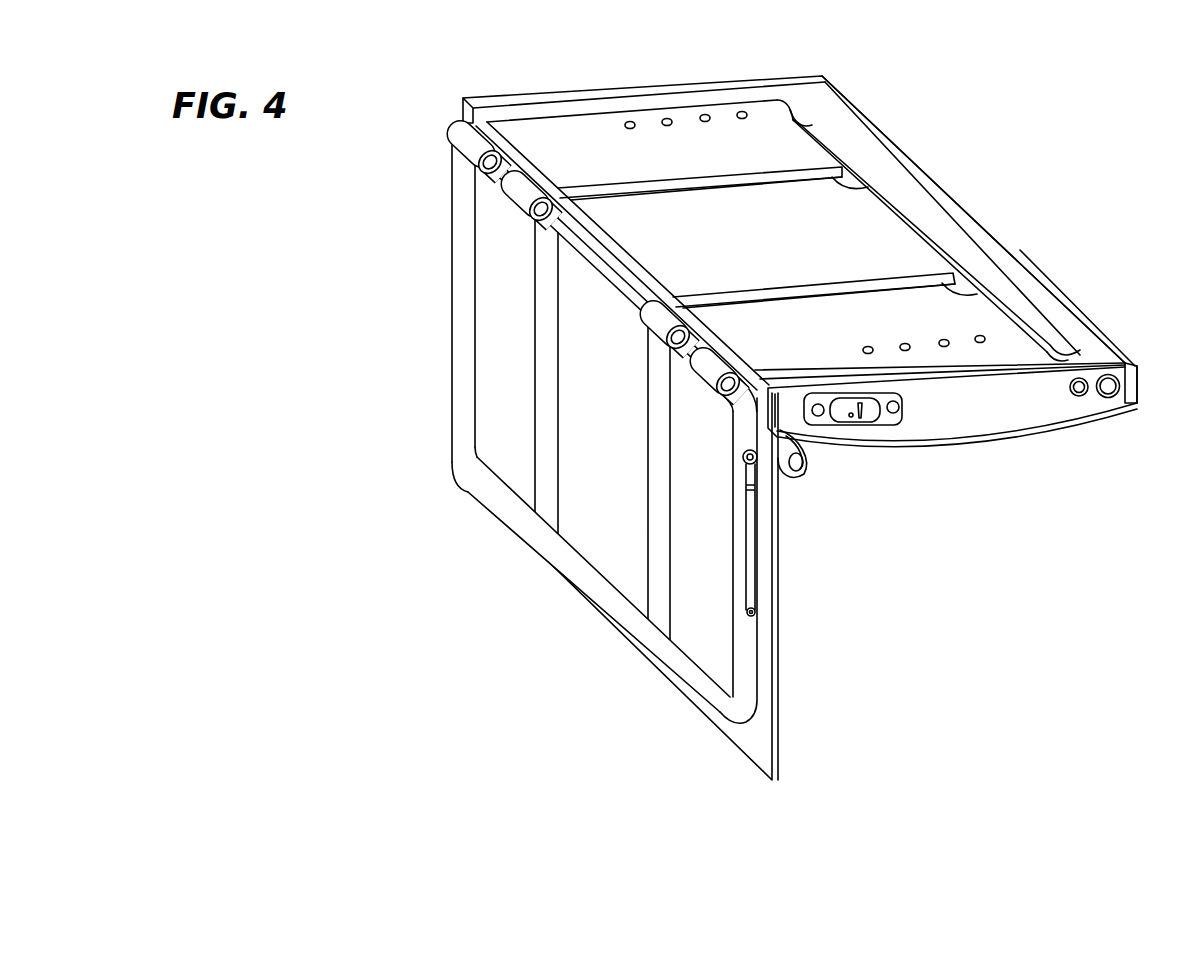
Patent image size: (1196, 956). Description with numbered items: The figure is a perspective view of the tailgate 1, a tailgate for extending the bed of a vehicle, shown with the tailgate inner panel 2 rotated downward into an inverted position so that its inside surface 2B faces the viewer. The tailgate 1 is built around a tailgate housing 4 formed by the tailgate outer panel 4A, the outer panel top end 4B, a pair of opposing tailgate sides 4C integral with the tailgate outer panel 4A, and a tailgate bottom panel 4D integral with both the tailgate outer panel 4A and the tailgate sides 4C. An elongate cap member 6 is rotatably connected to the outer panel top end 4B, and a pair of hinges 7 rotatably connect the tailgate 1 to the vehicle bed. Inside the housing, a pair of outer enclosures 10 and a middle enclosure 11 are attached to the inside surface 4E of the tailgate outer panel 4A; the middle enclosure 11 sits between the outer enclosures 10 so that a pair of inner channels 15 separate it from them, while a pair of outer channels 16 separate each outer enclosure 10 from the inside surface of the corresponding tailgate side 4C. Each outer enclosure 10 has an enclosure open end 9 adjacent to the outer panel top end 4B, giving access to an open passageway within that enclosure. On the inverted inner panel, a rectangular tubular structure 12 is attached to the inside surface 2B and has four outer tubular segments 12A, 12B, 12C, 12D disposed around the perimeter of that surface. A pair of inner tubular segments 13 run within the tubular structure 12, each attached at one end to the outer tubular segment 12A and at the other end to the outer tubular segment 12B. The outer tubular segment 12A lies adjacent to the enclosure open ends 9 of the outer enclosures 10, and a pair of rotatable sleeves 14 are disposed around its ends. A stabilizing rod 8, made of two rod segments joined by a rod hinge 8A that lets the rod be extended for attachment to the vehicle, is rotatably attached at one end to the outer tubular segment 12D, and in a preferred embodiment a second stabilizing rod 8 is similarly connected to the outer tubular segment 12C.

The tailgate 1 is at (1053, 90).
The tailgate inner panel 2 is at (779, 630).
The inside surface of the tailgate inner panel 2B is at (488, 342).
The tailgate housing 4 is at (973, 424).
The tailgate outer panel 4A is at (1080, 425).
The outer panel top end 4B is at (806, 456).
The tailgate sides 4C is at (655, 84).
The tailgate bottom panel 4D is at (993, 240).
The inside surface of the tailgate outer panel 4E is at (947, 247).
The elongate cap member 6 is at (808, 472).
The hinges 7 is at (828, 80).
The stabilizing rod 8 is at (757, 522).
The rod hinge 8A is at (756, 611).
The enclosure open end 9 is at (480, 165).
The outer enclosures 10 is at (835, 97).
The middle enclosure 11 is at (890, 227).
The rectangular tubular structure 12 is at (616, 434).
The outer tubular segment 12A is at (457, 292).
The outer tubular segment 12B is at (558, 545).
The outer tubular segment 12C is at (458, 246).
The outer tubular segment 12D is at (737, 568).
The inner tubular segments 13 is at (540, 348).
The rotatable sleeves 14 is at (458, 148).
The inner channels 15 is at (872, 183).
The outer channels 16 is at (723, 100).